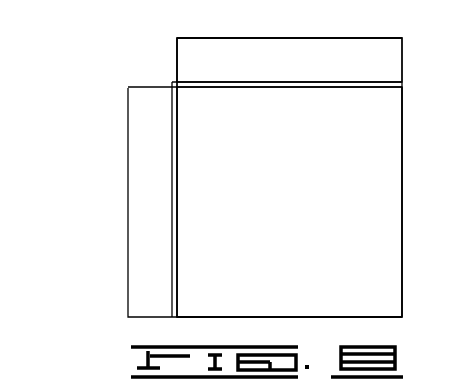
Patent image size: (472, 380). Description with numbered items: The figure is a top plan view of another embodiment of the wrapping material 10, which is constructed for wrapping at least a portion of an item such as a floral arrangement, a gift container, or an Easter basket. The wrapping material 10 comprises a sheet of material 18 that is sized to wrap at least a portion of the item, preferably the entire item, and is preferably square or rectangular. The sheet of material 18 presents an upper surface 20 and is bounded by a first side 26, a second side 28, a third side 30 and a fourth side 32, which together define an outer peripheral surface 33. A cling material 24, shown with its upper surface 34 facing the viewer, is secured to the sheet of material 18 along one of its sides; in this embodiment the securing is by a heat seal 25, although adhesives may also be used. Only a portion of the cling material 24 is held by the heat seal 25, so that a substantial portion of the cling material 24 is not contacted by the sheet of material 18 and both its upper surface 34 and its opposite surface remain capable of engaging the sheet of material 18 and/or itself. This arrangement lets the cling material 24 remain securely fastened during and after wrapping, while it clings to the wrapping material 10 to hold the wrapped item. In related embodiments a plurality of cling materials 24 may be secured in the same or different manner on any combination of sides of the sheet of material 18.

The wrapping material 10 is at (406, 62).
The sheet of material 18 is at (404, 150).
The upper surface 20 is at (368, 208).
The cling material 24 is at (127, 108).
The heat seal 25 is at (392, 84).
The first side 26 is at (172, 188).
The second side 28 is at (370, 317).
The third side 30 is at (403, 238).
The fourth side 32 is at (245, 81).
The outer peripheral surface 33 is at (404, 115).
The upper surface 34 is at (312, 58).